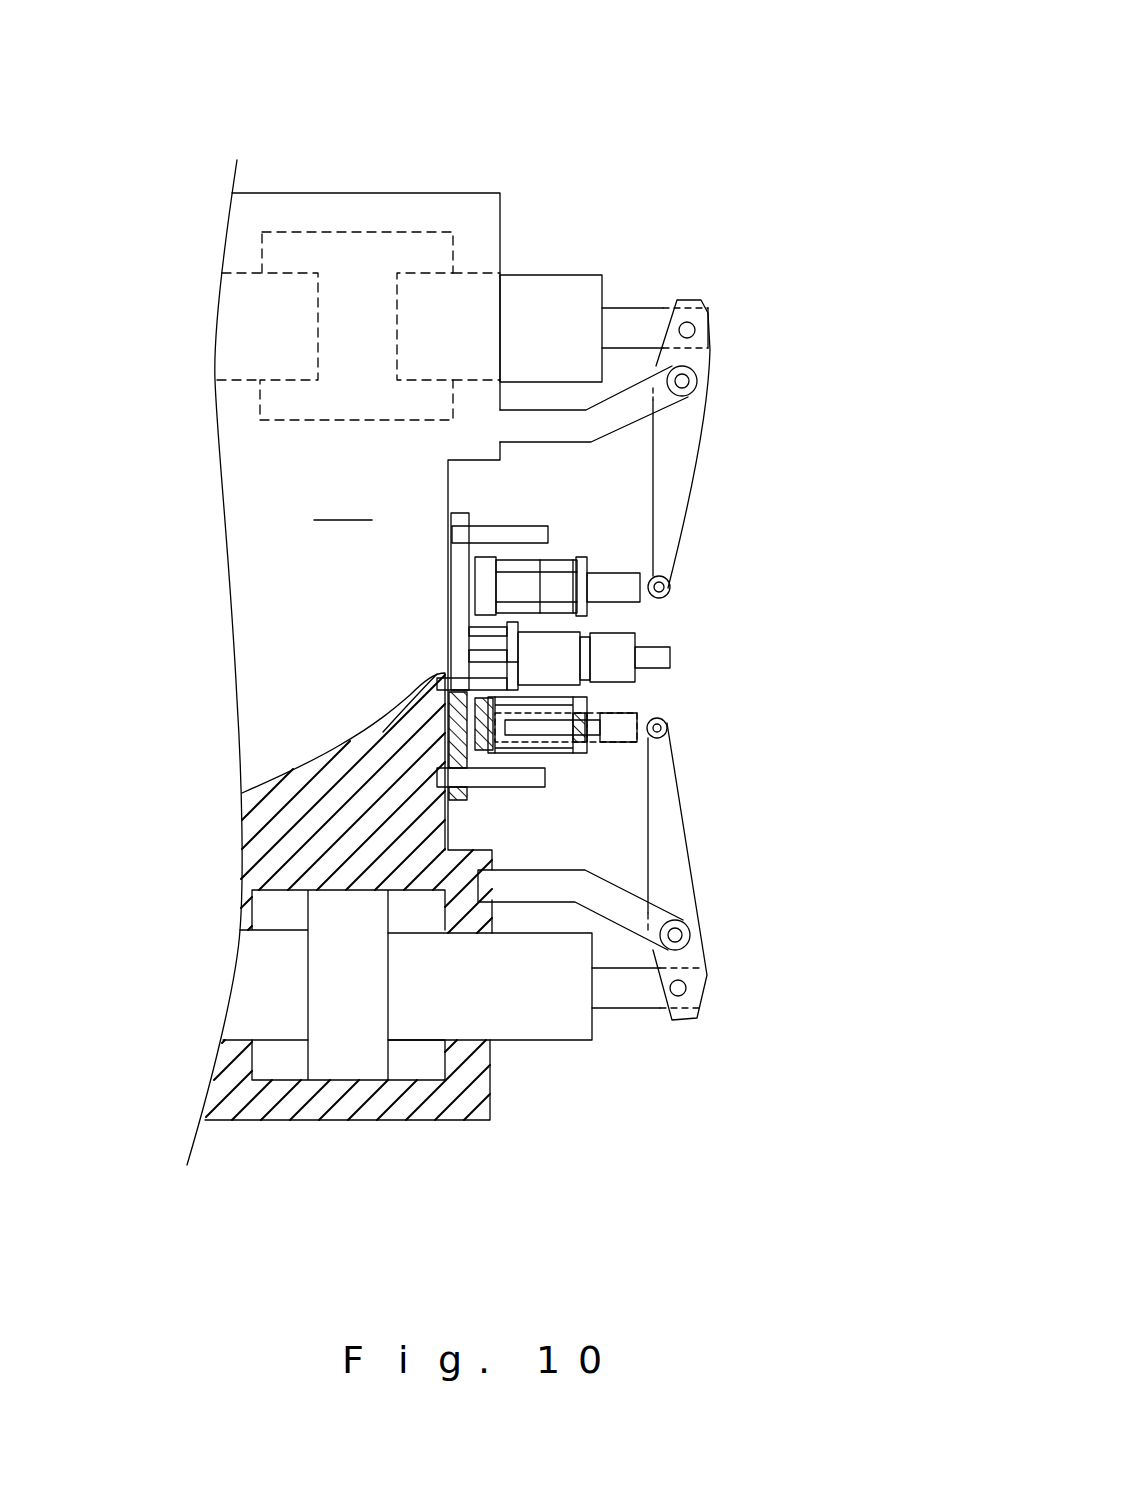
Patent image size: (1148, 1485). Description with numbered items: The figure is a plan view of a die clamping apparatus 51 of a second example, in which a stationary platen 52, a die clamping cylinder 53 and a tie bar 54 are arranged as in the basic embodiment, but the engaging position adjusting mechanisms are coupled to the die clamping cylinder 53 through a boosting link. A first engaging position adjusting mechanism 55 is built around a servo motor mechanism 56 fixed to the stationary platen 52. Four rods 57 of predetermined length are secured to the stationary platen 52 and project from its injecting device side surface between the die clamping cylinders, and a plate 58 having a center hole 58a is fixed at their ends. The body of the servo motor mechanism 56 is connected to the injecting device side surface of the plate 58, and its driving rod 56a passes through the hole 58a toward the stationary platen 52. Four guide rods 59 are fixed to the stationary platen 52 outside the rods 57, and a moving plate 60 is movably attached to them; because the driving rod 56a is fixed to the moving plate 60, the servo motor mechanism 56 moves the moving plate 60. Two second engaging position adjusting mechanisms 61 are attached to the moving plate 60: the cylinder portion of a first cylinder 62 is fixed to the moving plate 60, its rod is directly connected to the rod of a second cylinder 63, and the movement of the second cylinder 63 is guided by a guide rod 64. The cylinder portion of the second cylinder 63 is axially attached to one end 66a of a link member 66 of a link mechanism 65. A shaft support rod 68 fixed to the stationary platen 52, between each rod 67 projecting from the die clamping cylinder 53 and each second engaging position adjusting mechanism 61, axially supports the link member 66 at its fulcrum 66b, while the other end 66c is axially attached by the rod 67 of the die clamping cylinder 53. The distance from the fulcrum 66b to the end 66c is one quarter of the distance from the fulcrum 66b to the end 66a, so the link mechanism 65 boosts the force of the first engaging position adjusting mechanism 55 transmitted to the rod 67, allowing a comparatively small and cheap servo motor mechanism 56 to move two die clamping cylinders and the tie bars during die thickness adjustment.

The die clamping apparatus 51 is at (508, 596).
The stationary platen 52 is at (389, 662).
The die clamping cylinder 53 is at (363, 257).
The tie bar 54 is at (283, 297).
The first engaging position adjusting mechanism 55 is at (483, 774).
The servo motor mechanism 56 is at (590, 633).
The driving rod 56a is at (498, 658).
The rod 57 is at (483, 628).
The plate 58 is at (500, 648).
The center hole 58a is at (505, 552).
The guide rod 59 is at (490, 532).
The moving plate 60 is at (460, 558).
The second engaging position adjusting mechanism 61 is at (628, 547).
The first cylinder 62 is at (518, 773).
The second cylinder 63 is at (628, 745).
The guide rod 64 is at (566, 752).
The link mechanism 65 is at (736, 456).
The link member 66 is at (674, 471).
The end of link member 66a is at (671, 592).
The fulcrum 66b is at (700, 373).
The other end of link member 66c is at (702, 330).
The rod 67 is at (652, 323).
The shaft support rod 68 is at (620, 413).